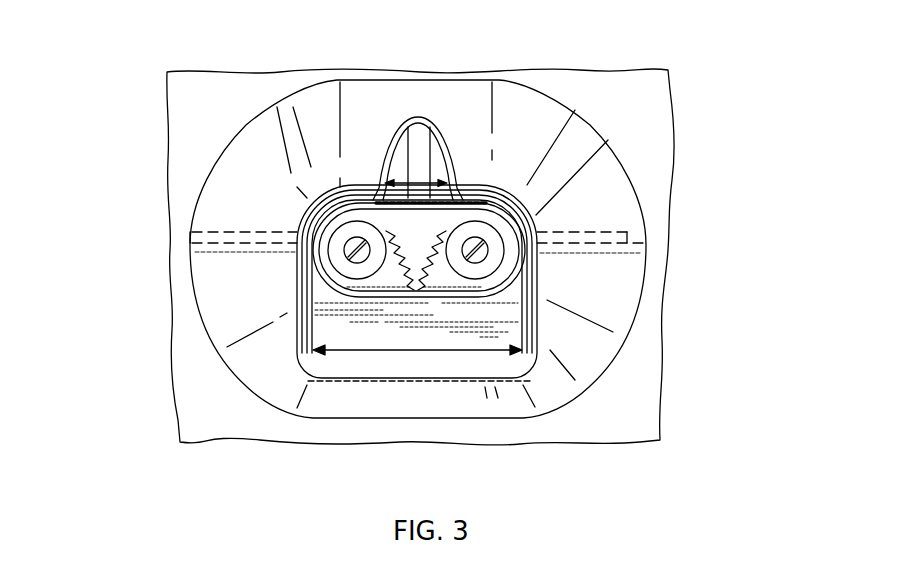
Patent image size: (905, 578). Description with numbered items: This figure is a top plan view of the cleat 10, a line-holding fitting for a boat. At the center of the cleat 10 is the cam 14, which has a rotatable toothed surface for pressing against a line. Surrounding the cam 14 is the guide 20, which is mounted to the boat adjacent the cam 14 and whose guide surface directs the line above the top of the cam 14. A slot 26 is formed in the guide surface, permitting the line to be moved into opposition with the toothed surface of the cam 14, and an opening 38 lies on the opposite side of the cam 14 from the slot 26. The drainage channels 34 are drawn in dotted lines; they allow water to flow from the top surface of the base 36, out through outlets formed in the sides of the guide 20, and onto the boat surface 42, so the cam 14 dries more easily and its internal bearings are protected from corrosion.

The cleat 10 is at (230, 98).
The cam 14 is at (393, 272).
The guide 20 is at (607, 288).
The slot 26 is at (422, 181).
The drainage channels 34 is at (253, 237).
The base 36 is at (360, 363).
The opening 38 is at (433, 352).
The boat surface 42 is at (639, 427).